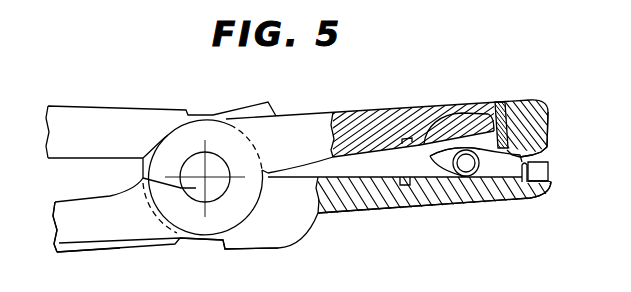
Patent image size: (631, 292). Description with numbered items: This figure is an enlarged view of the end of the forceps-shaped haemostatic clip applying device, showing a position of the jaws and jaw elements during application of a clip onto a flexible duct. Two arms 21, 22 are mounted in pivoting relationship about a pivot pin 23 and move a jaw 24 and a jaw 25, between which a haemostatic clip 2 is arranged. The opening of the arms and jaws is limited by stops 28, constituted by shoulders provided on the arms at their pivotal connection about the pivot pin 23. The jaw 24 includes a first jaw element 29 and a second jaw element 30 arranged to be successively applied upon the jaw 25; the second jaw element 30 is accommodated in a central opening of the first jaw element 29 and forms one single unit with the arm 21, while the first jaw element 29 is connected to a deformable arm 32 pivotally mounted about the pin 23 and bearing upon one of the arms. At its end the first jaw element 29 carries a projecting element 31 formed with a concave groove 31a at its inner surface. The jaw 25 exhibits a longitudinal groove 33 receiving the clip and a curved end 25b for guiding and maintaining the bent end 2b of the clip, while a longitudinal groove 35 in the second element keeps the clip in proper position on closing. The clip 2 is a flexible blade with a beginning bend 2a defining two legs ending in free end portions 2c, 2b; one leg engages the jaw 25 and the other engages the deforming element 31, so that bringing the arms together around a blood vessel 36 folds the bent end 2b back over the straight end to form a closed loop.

The haemostatic clip 2 is at (448, 186).
The beginning bend 2a is at (430, 156).
The curved or bent end portion 2b is at (525, 186).
The free end portion 2c is at (502, 102).
The arm 21 is at (93, 248).
The arm 22 is at (118, 118).
The pivot pin 23 is at (143, 178).
The jaw 24 is at (554, 92).
The jaw 25 is at (425, 215).
The curved or bent end 25b is at (551, 182).
The stops 28 is at (188, 112).
The first jaw element 29 is at (528, 100).
The second jaw element 30 is at (375, 113).
The projecting element 31 is at (556, 124).
The groove 31a is at (542, 152).
The deformable arm 32 is at (78, 231).
The longitudinal groove 33 is at (404, 186).
The longitudinal groove 35 is at (421, 130).
The blood vessel 36 is at (492, 180).